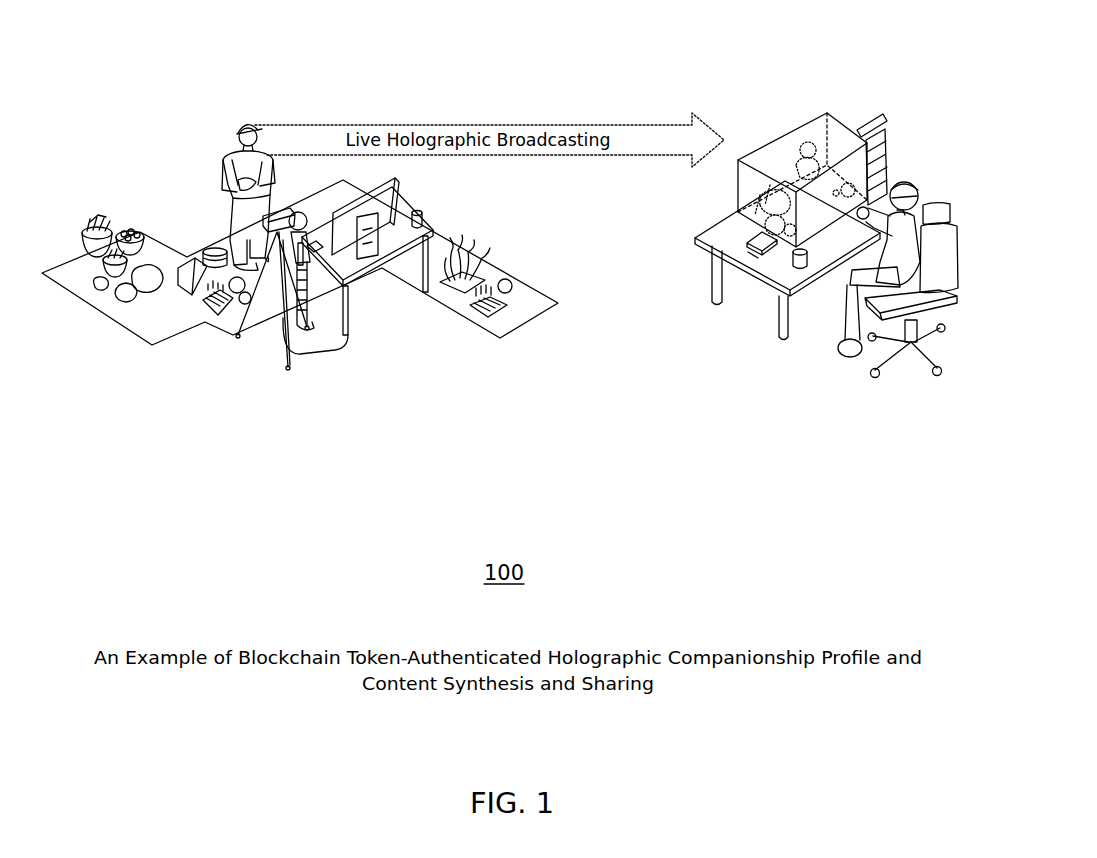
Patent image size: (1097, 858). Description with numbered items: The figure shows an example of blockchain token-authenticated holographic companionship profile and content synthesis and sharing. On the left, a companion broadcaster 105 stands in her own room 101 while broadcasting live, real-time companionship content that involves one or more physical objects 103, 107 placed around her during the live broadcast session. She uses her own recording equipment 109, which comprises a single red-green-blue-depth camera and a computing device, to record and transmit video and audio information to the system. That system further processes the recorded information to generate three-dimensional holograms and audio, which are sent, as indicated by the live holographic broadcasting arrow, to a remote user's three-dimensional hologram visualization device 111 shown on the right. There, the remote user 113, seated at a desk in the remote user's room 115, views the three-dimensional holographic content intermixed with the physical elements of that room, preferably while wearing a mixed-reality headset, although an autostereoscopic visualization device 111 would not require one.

The companion broadcaster's room 101 is at (300, 311).
The physical objects 103 is at (188, 248).
The companion broadcaster 105 is at (248, 182).
The physical objects 107 is at (495, 252).
The recording equipment 109 is at (300, 333).
The 3D hologram visualization device 111 is at (778, 128).
The remote user 113 is at (917, 177).
The remote user's room 115 is at (826, 313).